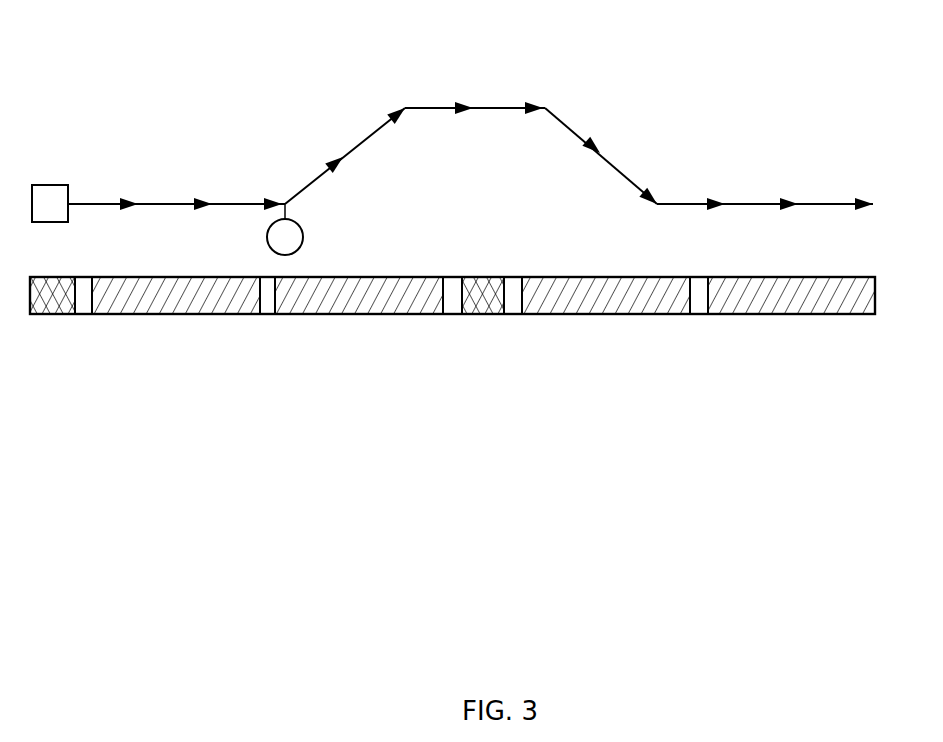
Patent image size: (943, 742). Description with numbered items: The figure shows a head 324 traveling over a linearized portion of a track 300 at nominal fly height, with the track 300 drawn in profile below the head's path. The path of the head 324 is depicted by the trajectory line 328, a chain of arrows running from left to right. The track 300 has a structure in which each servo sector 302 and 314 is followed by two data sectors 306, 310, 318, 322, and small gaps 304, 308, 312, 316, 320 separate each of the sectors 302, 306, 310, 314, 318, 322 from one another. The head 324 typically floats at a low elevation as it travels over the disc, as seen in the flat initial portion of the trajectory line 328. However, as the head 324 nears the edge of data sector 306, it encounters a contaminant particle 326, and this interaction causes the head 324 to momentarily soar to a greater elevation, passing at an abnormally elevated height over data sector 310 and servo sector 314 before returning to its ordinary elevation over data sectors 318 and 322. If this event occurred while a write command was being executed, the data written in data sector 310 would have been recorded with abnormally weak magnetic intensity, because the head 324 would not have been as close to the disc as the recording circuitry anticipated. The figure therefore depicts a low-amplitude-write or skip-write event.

The track 300 is at (50, 340).
The servo sector 302 is at (52, 314).
The gap 304 is at (82, 314).
The data sector 306 is at (177, 314).
The gap 308 is at (267, 314).
The data sector 310 is at (362, 314).
The gap 312 is at (455, 314).
The servo sector 314 is at (487, 314).
The gap 316 is at (515, 314).
The data sector 318 is at (608, 314).
The gap 320 is at (698, 314).
The data sector 322 is at (792, 314).
The head 324 is at (50, 185).
The contaminant particle 326 is at (285, 202).
The trajectory line 328 is at (503, 108).